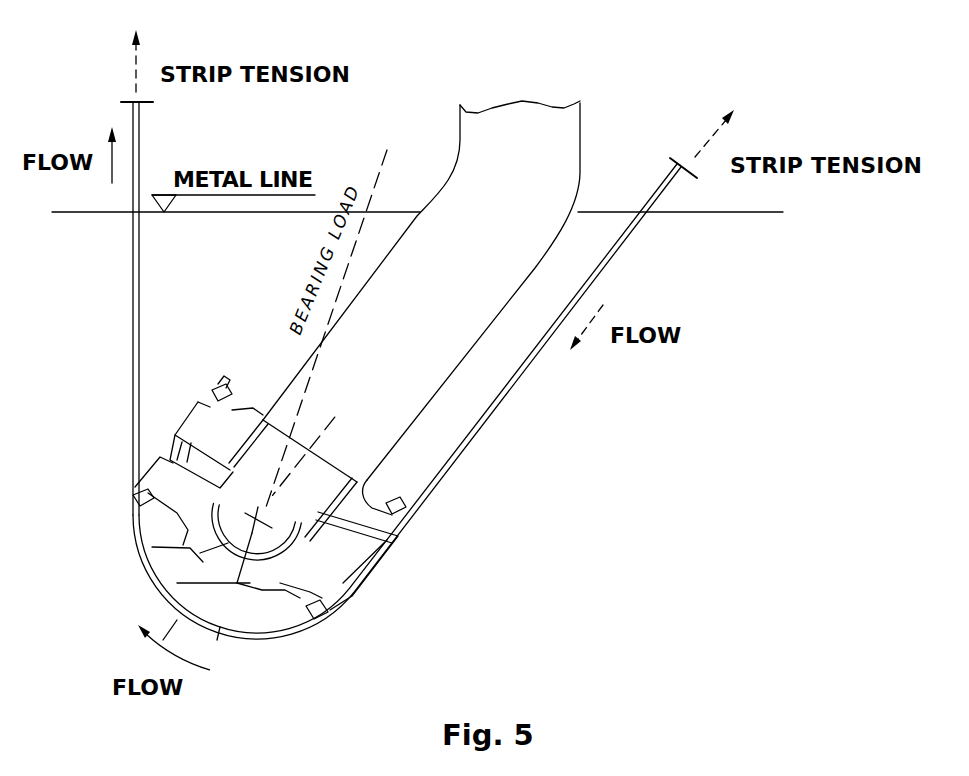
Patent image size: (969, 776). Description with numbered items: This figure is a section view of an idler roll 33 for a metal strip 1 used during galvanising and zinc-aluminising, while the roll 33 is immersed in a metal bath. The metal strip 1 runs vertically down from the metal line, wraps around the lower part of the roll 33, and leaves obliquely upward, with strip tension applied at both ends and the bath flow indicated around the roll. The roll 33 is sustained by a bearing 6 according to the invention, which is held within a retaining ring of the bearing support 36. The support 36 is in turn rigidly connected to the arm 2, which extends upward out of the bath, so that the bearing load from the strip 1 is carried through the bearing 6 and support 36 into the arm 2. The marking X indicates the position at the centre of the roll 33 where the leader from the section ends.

The metal strip 1 is at (387, 370).
The arm 2 is at (436, 304).
The bearing 6 is at (185, 562).
The idler roll 33 is at (264, 613).
The bearing support 36 is at (364, 570).
The roll axis X is at (243, 513).